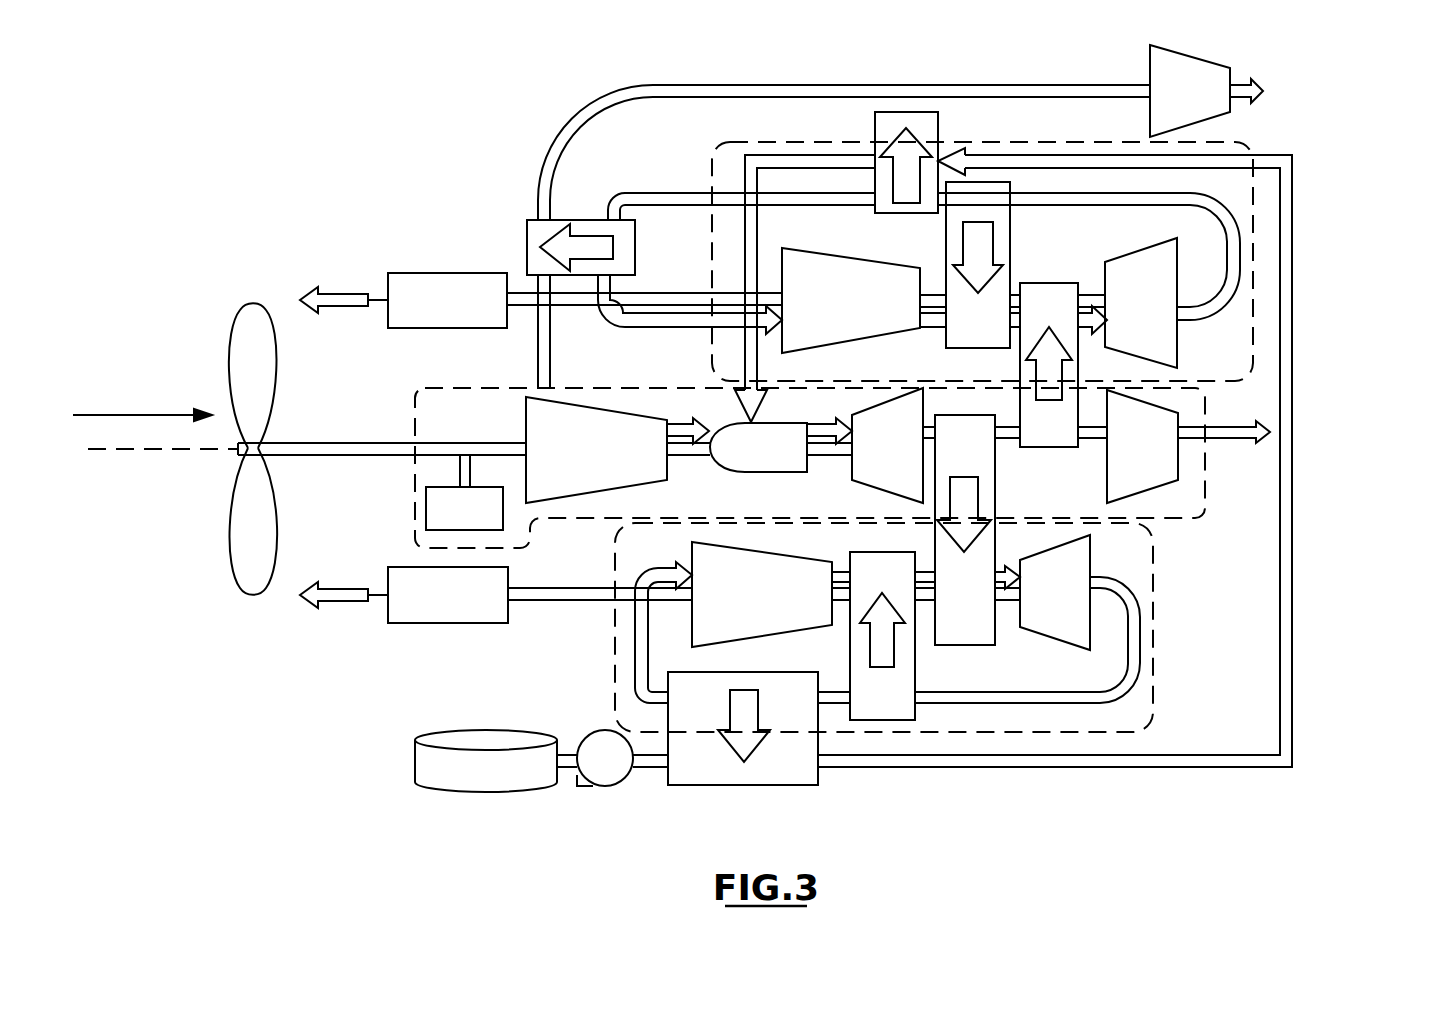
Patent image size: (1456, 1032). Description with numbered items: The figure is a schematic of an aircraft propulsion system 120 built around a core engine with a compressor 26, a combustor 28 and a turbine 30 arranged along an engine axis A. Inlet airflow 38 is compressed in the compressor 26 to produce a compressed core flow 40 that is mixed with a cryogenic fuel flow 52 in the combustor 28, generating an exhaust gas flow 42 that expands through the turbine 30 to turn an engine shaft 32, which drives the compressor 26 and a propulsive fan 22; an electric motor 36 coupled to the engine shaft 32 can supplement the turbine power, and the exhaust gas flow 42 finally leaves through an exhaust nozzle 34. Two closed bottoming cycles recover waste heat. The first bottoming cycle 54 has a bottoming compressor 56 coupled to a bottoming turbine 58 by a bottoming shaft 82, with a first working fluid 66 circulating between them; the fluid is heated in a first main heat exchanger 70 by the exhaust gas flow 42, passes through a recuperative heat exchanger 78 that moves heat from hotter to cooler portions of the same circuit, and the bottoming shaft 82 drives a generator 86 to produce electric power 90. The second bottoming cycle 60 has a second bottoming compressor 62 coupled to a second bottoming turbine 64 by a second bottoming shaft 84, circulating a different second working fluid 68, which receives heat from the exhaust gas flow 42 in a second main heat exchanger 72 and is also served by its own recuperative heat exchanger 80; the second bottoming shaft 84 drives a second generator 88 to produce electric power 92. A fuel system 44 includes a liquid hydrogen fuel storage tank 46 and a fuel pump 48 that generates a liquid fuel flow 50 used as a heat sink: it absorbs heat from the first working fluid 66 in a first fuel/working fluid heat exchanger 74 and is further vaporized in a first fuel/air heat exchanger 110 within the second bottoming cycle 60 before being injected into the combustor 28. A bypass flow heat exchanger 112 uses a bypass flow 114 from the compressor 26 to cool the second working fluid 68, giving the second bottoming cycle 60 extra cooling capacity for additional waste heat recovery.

The propulsive fan 22 is at (243, 332).
The engine shaft 32 is at (336, 440).
The inlet airflow 38 is at (113, 412).
The engine axis A is at (163, 452).
The compressor 26 is at (620, 494).
The electric motor 36 is at (416, 510).
The compressed core flow 40 is at (684, 436).
The combustor 28 is at (778, 474).
The exhaust gas flow 42 is at (823, 425).
The turbine 30 is at (849, 473).
The first main heat exchanger 70 is at (987, 484).
The second main heat exchanger 72 is at (1035, 436).
The exhaust nozzle 34 is at (1138, 495).
The second generator 88 is at (420, 273).
The electric power 92 is at (333, 297).
The second bottoming shaft 84 is at (571, 308).
The bypass flow heat exchanger 112 is at (527, 233).
The bypass flow 114 is at (560, 153).
The second bottoming cycle 60 is at (702, 166).
The second working fluid 68 is at (660, 207).
The second bottoming compressor 62 is at (860, 256).
The recuperative heat exchanger 80 is at (964, 337).
The second bottoming turbine 64 is at (1116, 263).
The first fuel/air heat exchanger 110 is at (936, 126).
The liquid fuel flow 50 is at (906, 768).
The cryogenic fuel flow 52 is at (740, 412).
The first bottoming cycle 54 is at (598, 642).
The generator 86 is at (421, 623).
The electric power 90 is at (333, 598).
The bottoming shaft 82 is at (592, 587).
The bottoming compressor 56 is at (766, 640).
The recuperative heat exchanger 78 is at (868, 706).
The bottoming turbine 58 is at (1041, 630).
The first working fluid 66 is at (640, 690).
The first fuel/working fluid heat exchanger 74 is at (728, 776).
The liquid hydrogen fuel storage tank 46 is at (523, 785).
The fuel pump 48 is at (596, 776).
The fuel system 44 is at (417, 823).
The aircraft propulsion system 120 is at (1352, 98).